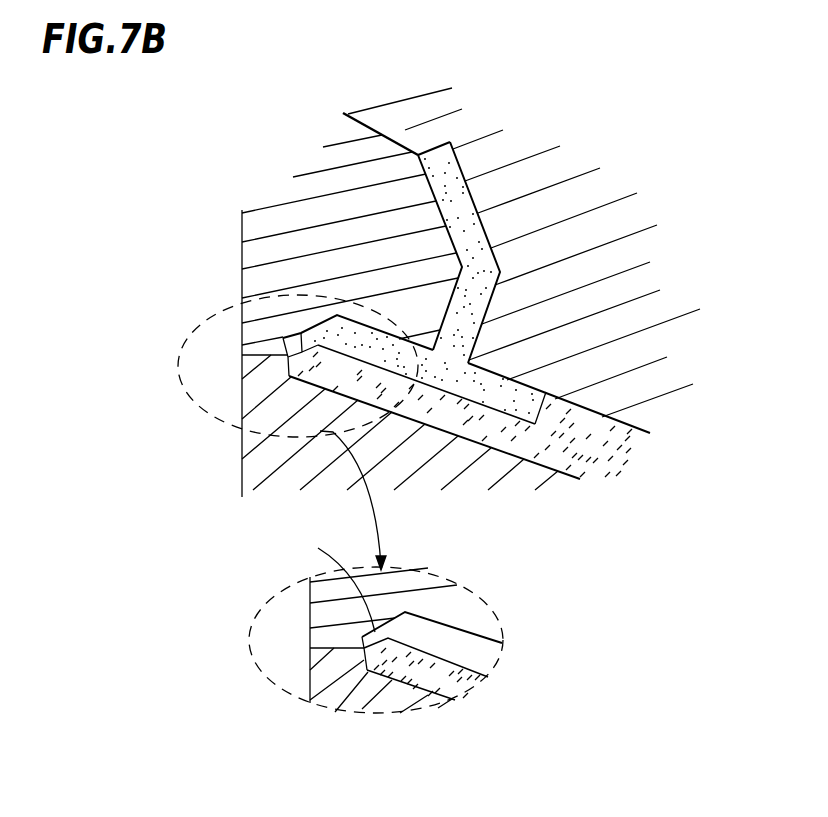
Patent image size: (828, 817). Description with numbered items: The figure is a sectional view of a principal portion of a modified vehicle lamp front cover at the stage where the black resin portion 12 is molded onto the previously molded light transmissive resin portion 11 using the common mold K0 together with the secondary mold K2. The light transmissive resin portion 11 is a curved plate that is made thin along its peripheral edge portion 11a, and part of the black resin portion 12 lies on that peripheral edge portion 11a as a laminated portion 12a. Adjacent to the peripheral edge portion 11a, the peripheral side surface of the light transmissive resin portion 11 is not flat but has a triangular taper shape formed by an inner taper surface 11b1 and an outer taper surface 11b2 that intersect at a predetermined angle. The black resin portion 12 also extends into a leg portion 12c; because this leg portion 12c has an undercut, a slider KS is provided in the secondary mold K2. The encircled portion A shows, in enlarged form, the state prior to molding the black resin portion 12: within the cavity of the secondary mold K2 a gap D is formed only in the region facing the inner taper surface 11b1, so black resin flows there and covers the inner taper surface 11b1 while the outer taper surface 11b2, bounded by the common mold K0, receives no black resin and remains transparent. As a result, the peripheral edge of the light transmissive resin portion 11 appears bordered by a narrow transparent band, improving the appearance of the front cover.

The light transmissive resin portion 11 is at (587, 452).
The peripheral edge portion 11a is at (470, 395).
The inner taper surface 11b1 is at (302, 340).
The outer taper surface 11b2 is at (288, 374).
The black resin portion 12 is at (438, 142).
The laminated portion 12a is at (537, 397).
The leg portion 12c is at (474, 207).
The slider KS is at (301, 210).
The secondary mold K2 is at (600, 270).
The common mold K0 is at (370, 732).
The portion A is at (179, 349).
The gap D is at (335, 582).